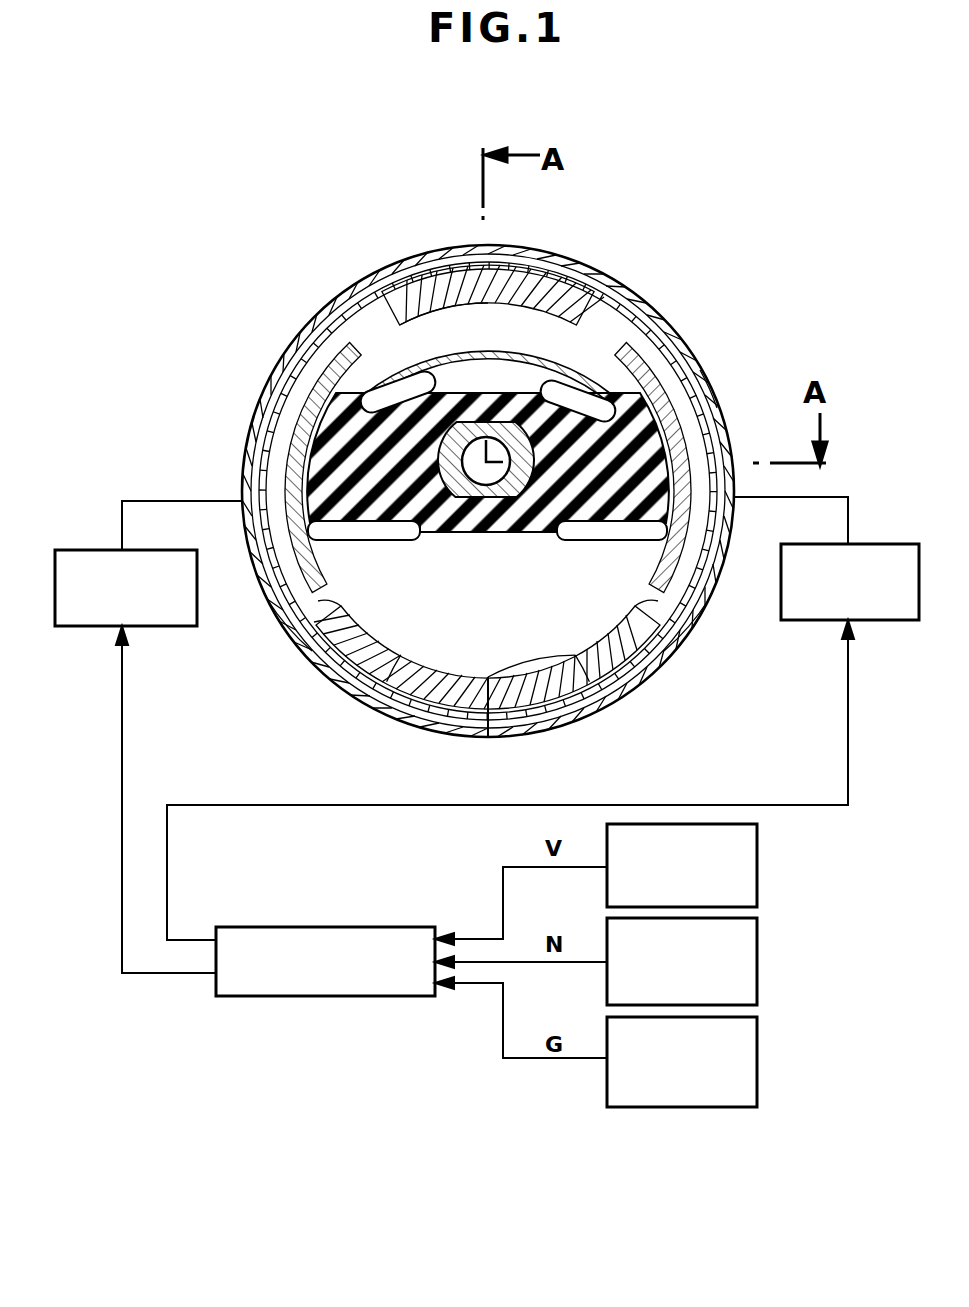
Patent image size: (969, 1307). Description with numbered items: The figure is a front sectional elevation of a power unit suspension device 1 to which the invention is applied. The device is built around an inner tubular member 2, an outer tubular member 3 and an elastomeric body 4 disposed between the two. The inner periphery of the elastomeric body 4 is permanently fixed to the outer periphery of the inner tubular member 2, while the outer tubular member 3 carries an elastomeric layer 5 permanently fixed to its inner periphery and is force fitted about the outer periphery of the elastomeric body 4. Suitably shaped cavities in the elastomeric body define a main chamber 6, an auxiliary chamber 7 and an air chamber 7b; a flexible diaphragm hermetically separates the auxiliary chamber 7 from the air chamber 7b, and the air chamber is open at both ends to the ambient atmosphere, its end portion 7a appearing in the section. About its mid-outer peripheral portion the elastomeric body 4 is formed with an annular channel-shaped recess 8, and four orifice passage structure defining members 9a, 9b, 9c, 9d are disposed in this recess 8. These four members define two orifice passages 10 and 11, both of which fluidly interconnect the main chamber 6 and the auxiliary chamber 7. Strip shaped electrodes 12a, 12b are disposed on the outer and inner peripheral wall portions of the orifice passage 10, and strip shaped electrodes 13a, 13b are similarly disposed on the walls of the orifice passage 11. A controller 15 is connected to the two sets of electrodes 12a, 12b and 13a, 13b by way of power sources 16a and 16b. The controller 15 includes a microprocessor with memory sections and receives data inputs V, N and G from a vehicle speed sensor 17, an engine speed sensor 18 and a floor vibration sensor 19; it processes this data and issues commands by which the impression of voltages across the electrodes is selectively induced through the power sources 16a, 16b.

The vibration damping device 1 is at (730, 250).
The inner tubular member 2 is at (395, 698).
The outer tubular member 3 is at (268, 393).
The elastomeric body 4 is at (283, 372).
The elastomeric layer 5 is at (335, 305).
The main chamber 6 is at (600, 685).
The auxiliary chamber 7 is at (530, 370).
The leaf spring end 7a is at (610, 345).
The air chamber 7b is at (585, 365).
The annular channel-shaped recess 8 is at (305, 468).
The orifice passage structure defining member 9a is at (447, 275).
The orifice passage structure defining member 9b is at (405, 300).
The orifice passage structure defining member 9c is at (528, 715).
The orifice passage structure defining member 9d is at (580, 700).
The orifice passage 10 is at (292, 432).
The orifice passage 11 is at (700, 368).
The strip shaped electrode 12a is at (262, 598).
The strip shaped electrode 12b is at (278, 620).
The strip shaped electrode 13a is at (712, 598).
The strip shaped electrode 13b is at (700, 615).
The controller 15 is at (332, 927).
The power source 16a is at (102, 550).
The power source 16b is at (893, 544).
The vehicle speed sensor 17 is at (757, 867).
The engine speed sensor 18 is at (757, 962).
The floor vibration sensor 19 is at (757, 1068).